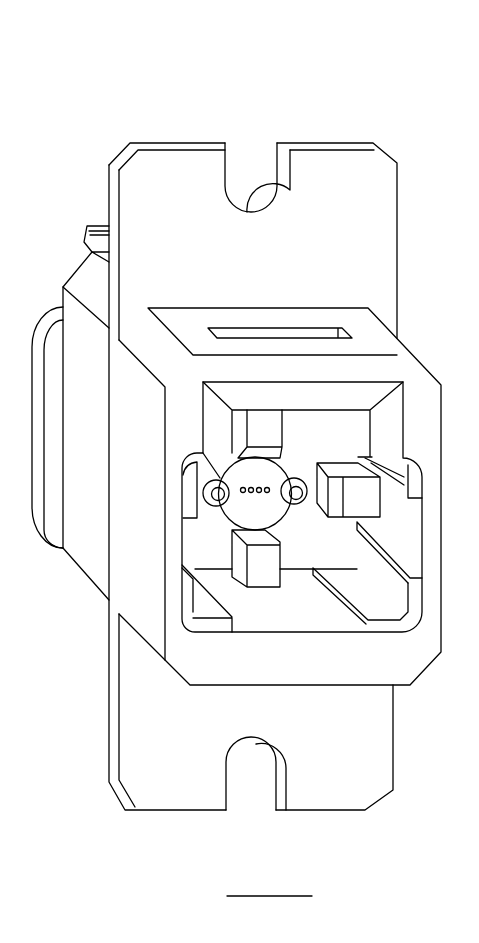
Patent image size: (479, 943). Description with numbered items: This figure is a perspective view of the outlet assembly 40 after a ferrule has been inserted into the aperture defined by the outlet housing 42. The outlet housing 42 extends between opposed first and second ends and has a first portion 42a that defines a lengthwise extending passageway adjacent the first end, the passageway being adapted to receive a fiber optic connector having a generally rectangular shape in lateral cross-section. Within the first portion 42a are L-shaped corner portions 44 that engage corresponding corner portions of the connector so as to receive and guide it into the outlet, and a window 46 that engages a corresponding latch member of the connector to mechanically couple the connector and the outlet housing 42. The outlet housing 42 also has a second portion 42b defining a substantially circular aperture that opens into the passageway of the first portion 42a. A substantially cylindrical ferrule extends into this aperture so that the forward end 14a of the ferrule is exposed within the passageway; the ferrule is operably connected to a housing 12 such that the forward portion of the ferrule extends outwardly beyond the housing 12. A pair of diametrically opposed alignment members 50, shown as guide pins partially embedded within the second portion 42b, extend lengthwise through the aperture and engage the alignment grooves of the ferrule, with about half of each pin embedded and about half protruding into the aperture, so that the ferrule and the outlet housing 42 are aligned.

The outlet assembly 40 is at (385, 108).
The outlet housing 42 is at (375, 232).
The first portion of the outlet housing 42a is at (310, 613).
The second portion of the outlet housing 42b is at (335, 548).
The L-shaped corner portions 44 is at (192, 628).
The window 46 is at (338, 330).
The alignment member 50 is at (300, 478).
The forward end of the ferrule 14a is at (233, 502).
The housing 12 is at (50, 317).